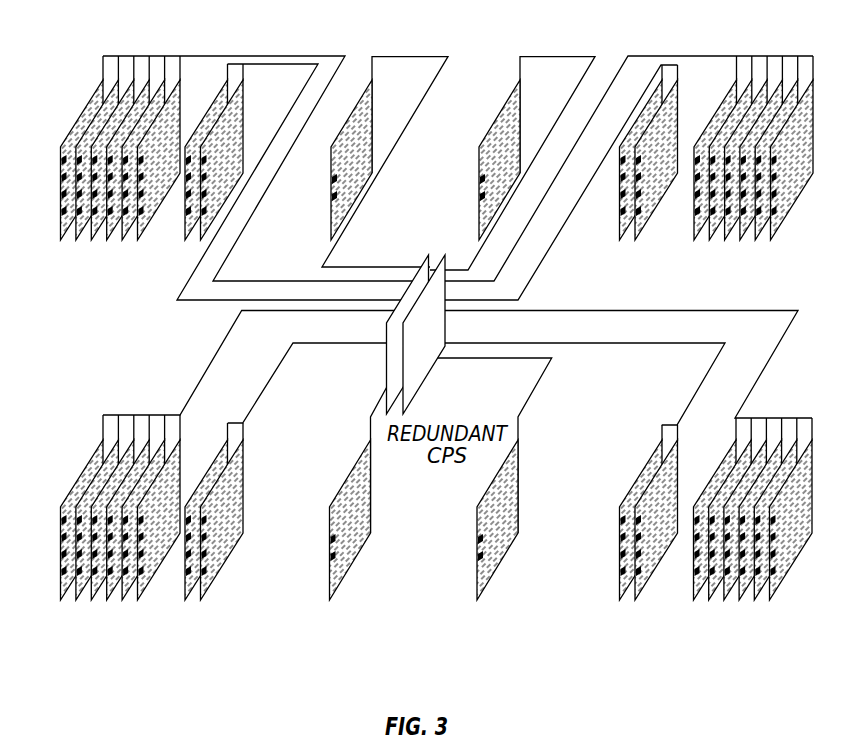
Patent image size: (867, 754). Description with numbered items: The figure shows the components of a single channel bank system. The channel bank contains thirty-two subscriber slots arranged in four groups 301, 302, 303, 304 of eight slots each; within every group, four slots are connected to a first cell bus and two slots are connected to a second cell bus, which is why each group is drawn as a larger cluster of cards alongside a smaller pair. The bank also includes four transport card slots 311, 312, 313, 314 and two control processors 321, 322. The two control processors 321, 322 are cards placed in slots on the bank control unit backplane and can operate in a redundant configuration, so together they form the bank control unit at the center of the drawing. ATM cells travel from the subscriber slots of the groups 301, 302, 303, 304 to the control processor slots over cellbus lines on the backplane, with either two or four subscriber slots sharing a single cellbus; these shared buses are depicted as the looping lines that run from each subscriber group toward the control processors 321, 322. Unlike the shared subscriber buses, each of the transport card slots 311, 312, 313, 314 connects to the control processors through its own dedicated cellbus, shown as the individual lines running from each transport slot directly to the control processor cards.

The subscriber slot group 301 is at (95, 249).
The subscriber slot group 302 is at (95, 606).
The subscriber slot group 303 is at (738, 249).
The subscriber slot group 304 is at (739, 602).
The transport card slot 311 is at (372, 108).
The transport card slot 312 is at (330, 527).
The transport card slot 313 is at (480, 195).
The transport card slot 314 is at (477, 527).
The control processor 321 is at (387, 338).
The control processor 322 is at (445, 338).